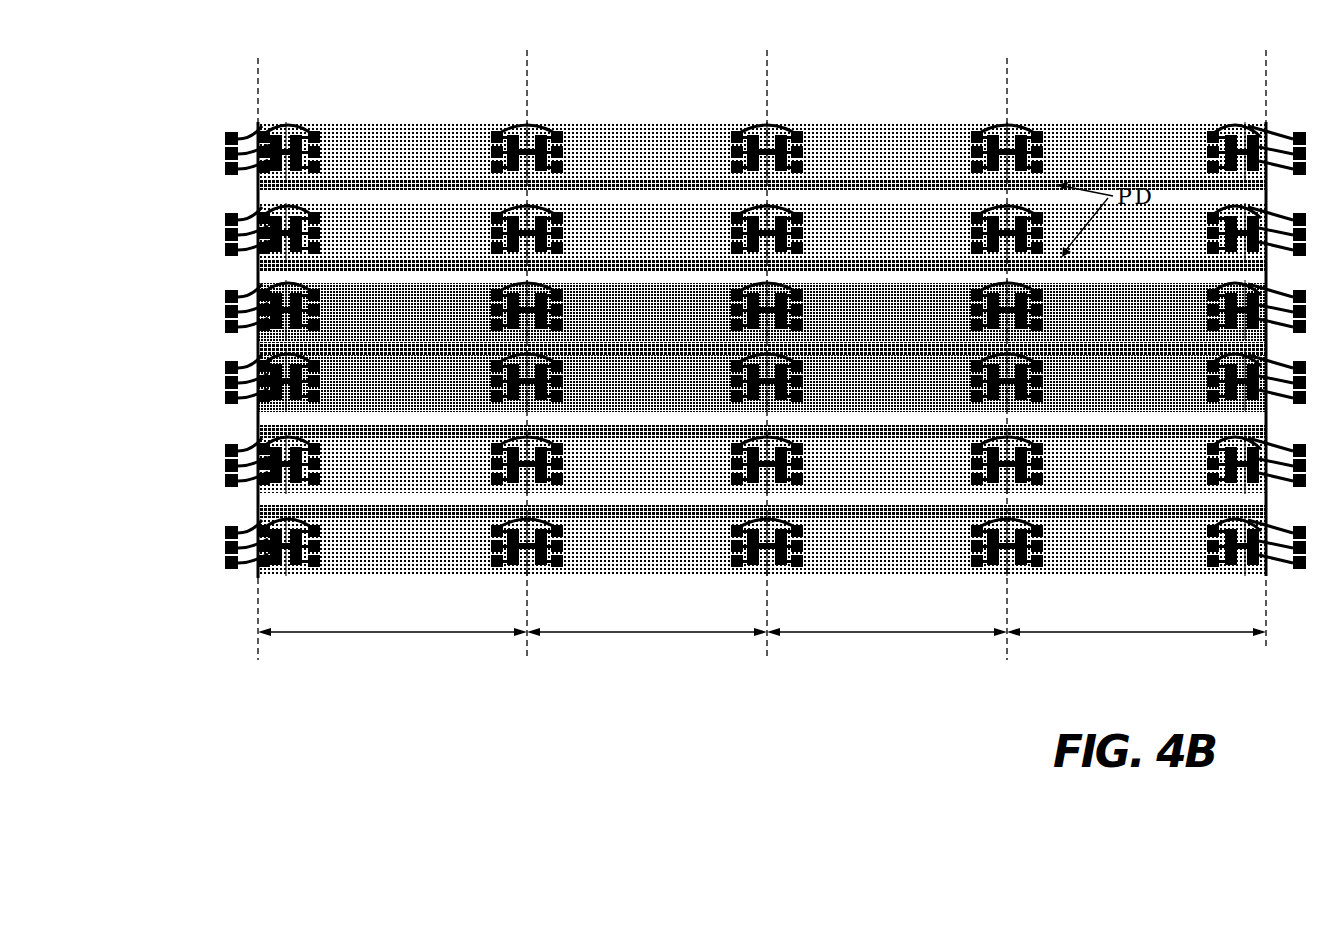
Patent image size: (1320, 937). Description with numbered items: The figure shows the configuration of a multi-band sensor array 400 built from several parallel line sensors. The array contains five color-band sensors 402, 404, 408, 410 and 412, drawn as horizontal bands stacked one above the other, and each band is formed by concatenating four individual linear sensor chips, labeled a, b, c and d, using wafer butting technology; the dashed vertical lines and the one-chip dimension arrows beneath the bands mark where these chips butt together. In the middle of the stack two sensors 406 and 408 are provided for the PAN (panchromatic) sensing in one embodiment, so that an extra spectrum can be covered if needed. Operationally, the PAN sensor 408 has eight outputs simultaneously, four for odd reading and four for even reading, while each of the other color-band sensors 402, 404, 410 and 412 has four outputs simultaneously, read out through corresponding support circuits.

The multi-band sensor array 400 is at (762, 375).
The color-band sensor 402 is at (727, 157).
The color-band sensor 404 is at (727, 237).
The PAN sensor 406 is at (744, 317).
The PAN sensor 408 is at (727, 375).
The color-band sensor 410 is at (727, 466).
The color-band sensor 412 is at (727, 542).